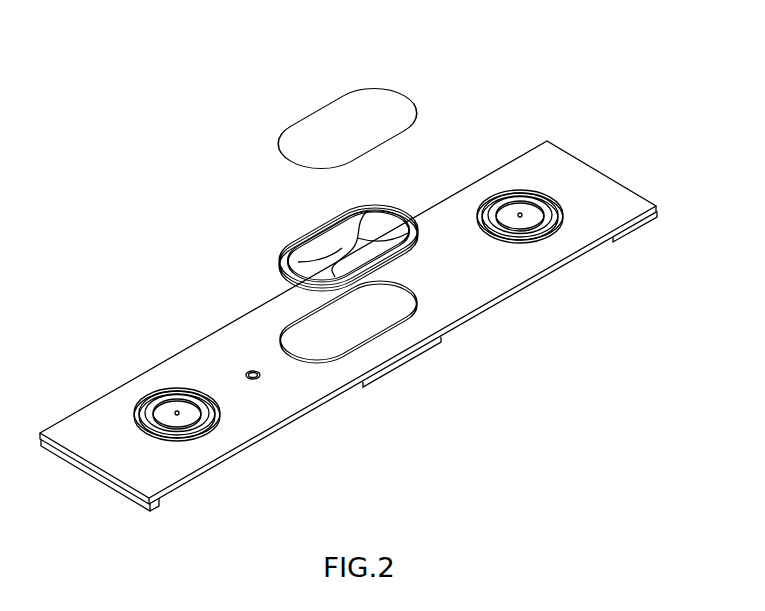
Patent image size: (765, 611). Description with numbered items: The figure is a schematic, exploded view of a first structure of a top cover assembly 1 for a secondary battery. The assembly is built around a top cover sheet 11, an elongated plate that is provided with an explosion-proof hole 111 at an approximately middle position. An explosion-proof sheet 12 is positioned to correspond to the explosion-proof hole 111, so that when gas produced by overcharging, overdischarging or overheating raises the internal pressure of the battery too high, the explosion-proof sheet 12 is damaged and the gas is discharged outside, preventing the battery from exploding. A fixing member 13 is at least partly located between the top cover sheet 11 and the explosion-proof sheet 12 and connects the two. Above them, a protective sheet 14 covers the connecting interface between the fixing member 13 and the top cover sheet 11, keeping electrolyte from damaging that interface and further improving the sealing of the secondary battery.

The top cover assembly 1 is at (556, 97).
The top cover sheet 11 is at (607, 195).
The explosion-proof hole 111 is at (385, 320).
The explosion-proof sheet 12 is at (325, 250).
The fixing member 13 is at (395, 207).
The protective sheet 14 is at (387, 103).